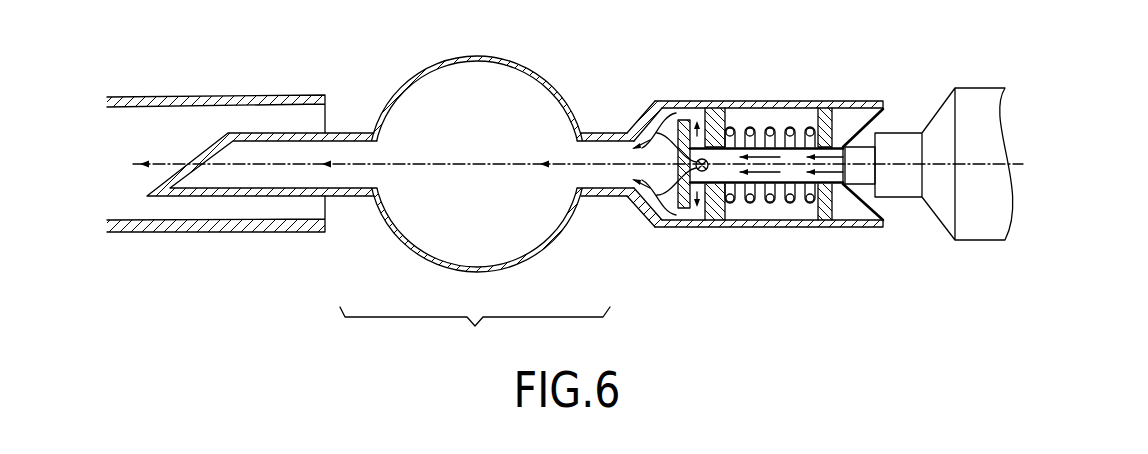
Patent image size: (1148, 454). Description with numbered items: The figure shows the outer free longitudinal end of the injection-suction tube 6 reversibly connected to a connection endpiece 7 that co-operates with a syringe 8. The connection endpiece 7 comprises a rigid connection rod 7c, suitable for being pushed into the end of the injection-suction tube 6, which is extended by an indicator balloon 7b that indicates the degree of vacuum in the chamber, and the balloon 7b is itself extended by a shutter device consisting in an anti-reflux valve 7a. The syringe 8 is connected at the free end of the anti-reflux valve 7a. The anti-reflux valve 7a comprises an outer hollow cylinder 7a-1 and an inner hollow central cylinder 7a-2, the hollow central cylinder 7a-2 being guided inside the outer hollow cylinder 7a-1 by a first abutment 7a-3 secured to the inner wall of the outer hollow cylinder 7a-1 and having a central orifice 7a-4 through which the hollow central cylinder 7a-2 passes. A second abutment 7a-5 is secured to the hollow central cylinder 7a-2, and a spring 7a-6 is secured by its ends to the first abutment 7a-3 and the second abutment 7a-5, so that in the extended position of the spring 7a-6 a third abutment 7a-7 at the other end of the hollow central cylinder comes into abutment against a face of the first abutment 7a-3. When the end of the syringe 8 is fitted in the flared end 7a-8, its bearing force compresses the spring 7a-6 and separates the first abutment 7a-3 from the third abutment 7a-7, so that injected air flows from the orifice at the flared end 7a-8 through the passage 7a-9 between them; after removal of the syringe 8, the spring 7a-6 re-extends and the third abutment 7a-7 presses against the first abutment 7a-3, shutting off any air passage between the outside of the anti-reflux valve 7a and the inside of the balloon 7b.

The injection-suction tube 6 is at (262, 232).
The connection endpiece 7 is at (475, 334).
The anti-reflux valve 7a is at (749, 182).
The balloon 7b is at (443, 269).
The connection rod 7c is at (342, 194).
The outer hollow cylinder 7a-1 is at (781, 228).
The hollow central cylinder 7a-2 is at (803, 185).
The first abutment 7a-3 is at (713, 130).
The central orifice 7a-4 is at (733, 147).
The second abutment 7a-5 is at (828, 204).
The spring 7a-6 is at (772, 127).
The third abutment 7a-7 is at (687, 209).
The flared end 7a-8 is at (641, 130).
The passage 7a-9 is at (702, 173).
The syringe 8 is at (982, 96).